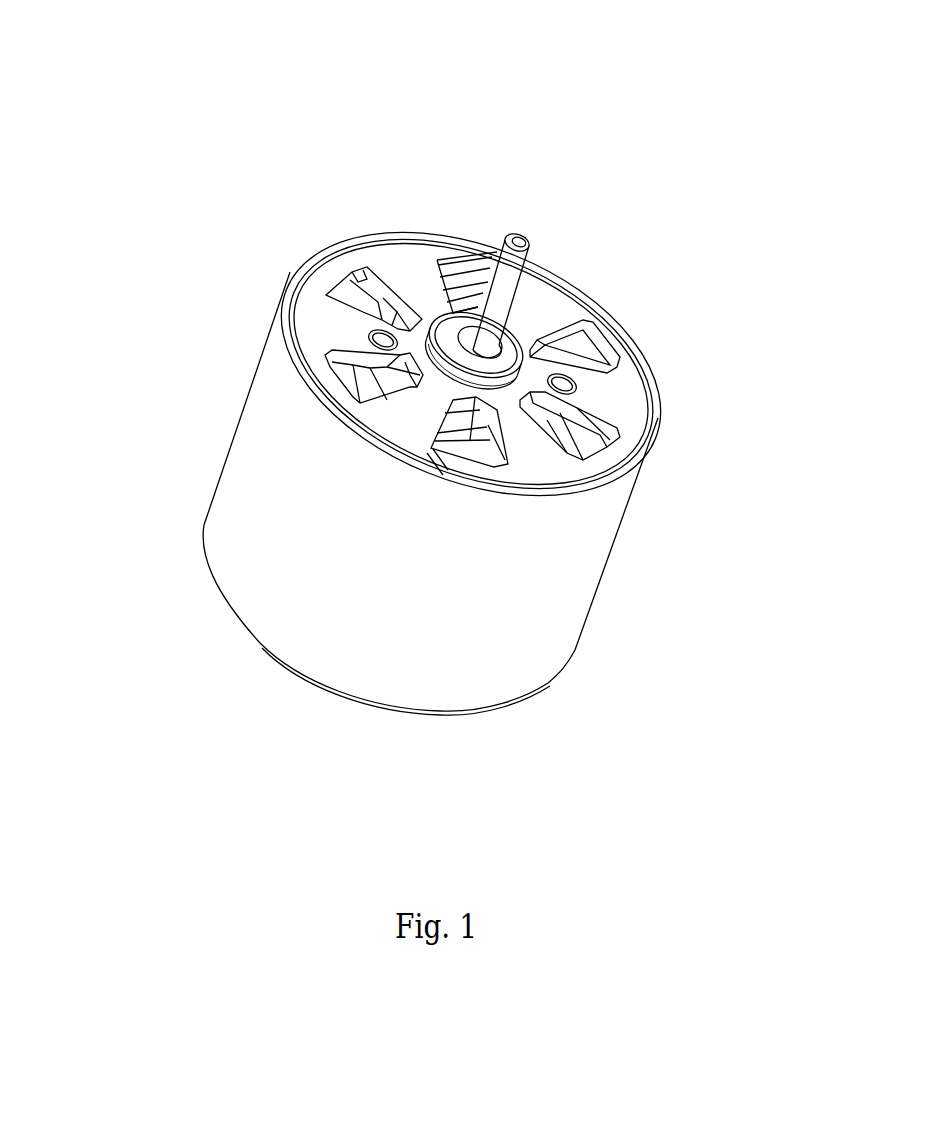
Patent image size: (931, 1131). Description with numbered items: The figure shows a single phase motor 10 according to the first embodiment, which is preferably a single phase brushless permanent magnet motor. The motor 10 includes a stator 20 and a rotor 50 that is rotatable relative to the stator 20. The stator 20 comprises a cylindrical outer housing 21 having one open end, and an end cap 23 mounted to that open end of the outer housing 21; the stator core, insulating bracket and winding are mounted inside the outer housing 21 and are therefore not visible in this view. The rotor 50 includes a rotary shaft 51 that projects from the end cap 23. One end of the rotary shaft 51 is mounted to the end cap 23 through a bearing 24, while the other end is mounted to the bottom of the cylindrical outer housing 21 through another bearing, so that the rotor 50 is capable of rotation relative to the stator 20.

The single phase motor 10 is at (471, 42).
The stator 20 is at (261, 650).
The cylindrical outer housing 21 is at (553, 603).
The end cap 23 is at (600, 395).
The bearing 24 is at (510, 337).
The rotor 50 is at (517, 290).
The rotary shaft 51 is at (505, 277).